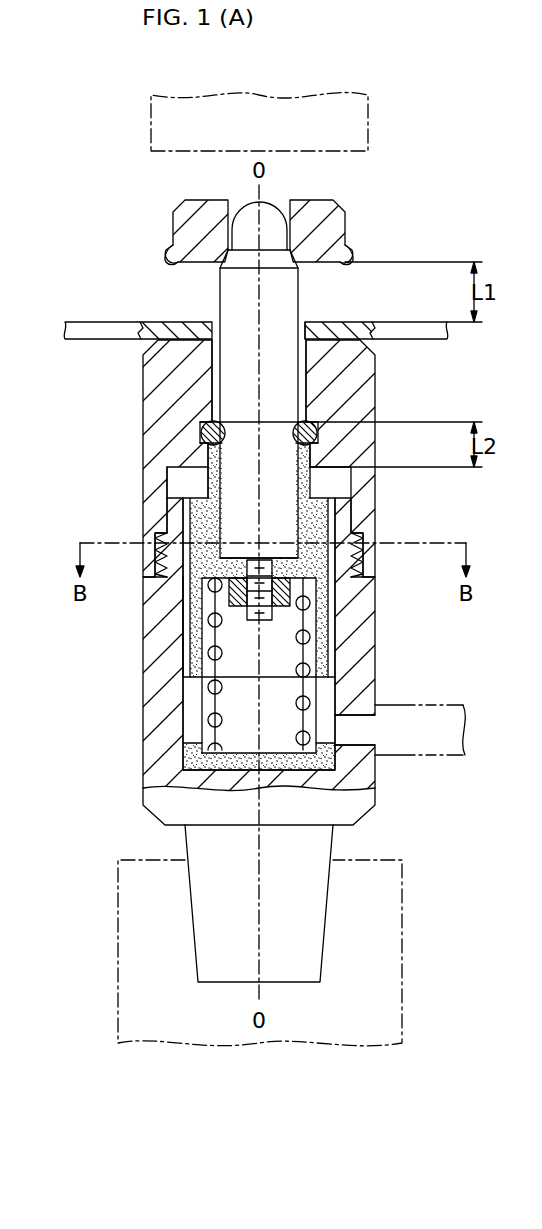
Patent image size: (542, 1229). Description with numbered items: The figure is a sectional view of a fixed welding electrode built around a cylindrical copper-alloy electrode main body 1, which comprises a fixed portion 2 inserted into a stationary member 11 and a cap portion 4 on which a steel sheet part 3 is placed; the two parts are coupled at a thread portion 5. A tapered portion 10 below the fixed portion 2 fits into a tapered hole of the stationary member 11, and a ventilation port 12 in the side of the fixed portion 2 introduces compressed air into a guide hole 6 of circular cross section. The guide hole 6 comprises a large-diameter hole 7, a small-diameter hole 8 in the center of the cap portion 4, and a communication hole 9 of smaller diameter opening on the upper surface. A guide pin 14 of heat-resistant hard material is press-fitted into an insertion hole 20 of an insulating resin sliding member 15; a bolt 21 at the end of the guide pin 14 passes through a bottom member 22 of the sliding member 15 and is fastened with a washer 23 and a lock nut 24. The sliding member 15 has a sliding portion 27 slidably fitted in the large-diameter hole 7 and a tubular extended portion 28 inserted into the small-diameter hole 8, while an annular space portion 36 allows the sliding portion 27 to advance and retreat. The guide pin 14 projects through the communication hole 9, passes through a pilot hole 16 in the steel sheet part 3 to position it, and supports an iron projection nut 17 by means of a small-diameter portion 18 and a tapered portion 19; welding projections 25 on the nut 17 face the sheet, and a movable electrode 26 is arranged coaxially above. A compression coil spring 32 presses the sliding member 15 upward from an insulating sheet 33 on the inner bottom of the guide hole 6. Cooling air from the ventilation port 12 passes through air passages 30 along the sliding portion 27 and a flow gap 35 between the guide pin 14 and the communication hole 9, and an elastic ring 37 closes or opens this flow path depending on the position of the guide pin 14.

The electrode main body 1 is at (128, 684).
The fixed portion 2 is at (143, 763).
The steel sheet part 3 is at (92, 322).
The cap portion 4 is at (143, 379).
The thread portion 5 is at (157, 565).
The guide hole 6 is at (195, 710).
The large-diameter hole 7 is at (332, 703).
The small-diameter hole 8 is at (305, 478).
The communication hole 9 is at (300, 392).
The tapered portion 10 is at (322, 955).
The stationary member 11 is at (402, 958).
The ventilation port 12 is at (365, 730).
The guide pin 14 is at (220, 302).
The sliding member 15 is at (192, 522).
The pilot hole 16 is at (306, 320).
The projection nut 17 is at (317, 199).
The small-diameter portion 18 is at (245, 231).
The tapered portion 19 is at (276, 255).
The insertion hole 20 is at (216, 493).
The bolt 21 is at (246, 620).
The bottom member 22 is at (262, 557).
The washer 23 is at (332, 577).
The lock nut 24 is at (284, 620).
The welding projections 25 is at (351, 265).
The movable electrode 26 is at (368, 102).
The sliding portion 27 is at (190, 618).
The extended portion 28 is at (212, 452).
The air passages 30 is at (187, 640).
The compression coil spring 32 is at (240, 742).
The insulating sheet 33 is at (303, 742).
The flow gap 35 is at (210, 392).
The annular space portion 36 is at (200, 506).
The elastic ring 37 is at (318, 432).